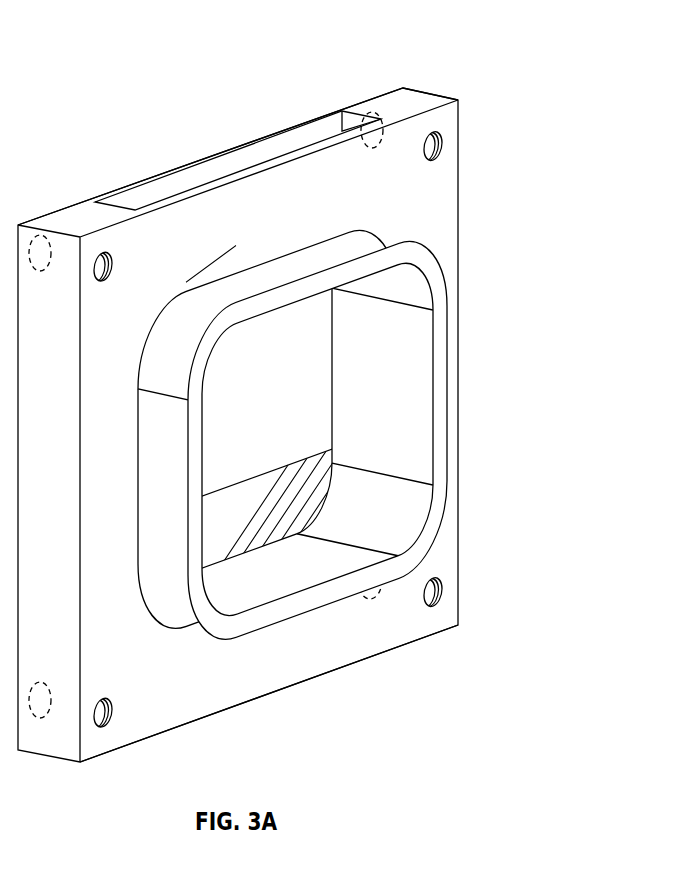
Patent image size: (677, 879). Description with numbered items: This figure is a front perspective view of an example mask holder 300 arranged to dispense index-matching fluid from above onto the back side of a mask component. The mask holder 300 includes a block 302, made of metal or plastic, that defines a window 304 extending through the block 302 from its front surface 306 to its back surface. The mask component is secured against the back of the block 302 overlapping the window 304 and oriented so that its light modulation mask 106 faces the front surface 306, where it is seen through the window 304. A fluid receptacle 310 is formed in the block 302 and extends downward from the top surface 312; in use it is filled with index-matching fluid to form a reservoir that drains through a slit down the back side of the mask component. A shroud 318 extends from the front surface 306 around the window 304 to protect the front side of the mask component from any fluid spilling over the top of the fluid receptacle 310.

The mask holder 300 is at (299, 386).
The block 302 is at (447, 192).
The window 304 is at (300, 495).
The front surface 306 is at (206, 698).
The fluid receptacle 310 is at (137, 195).
The top surface 312 is at (394, 104).
The shroud 318 is at (442, 322).
The light modulation mask 106 is at (292, 417).